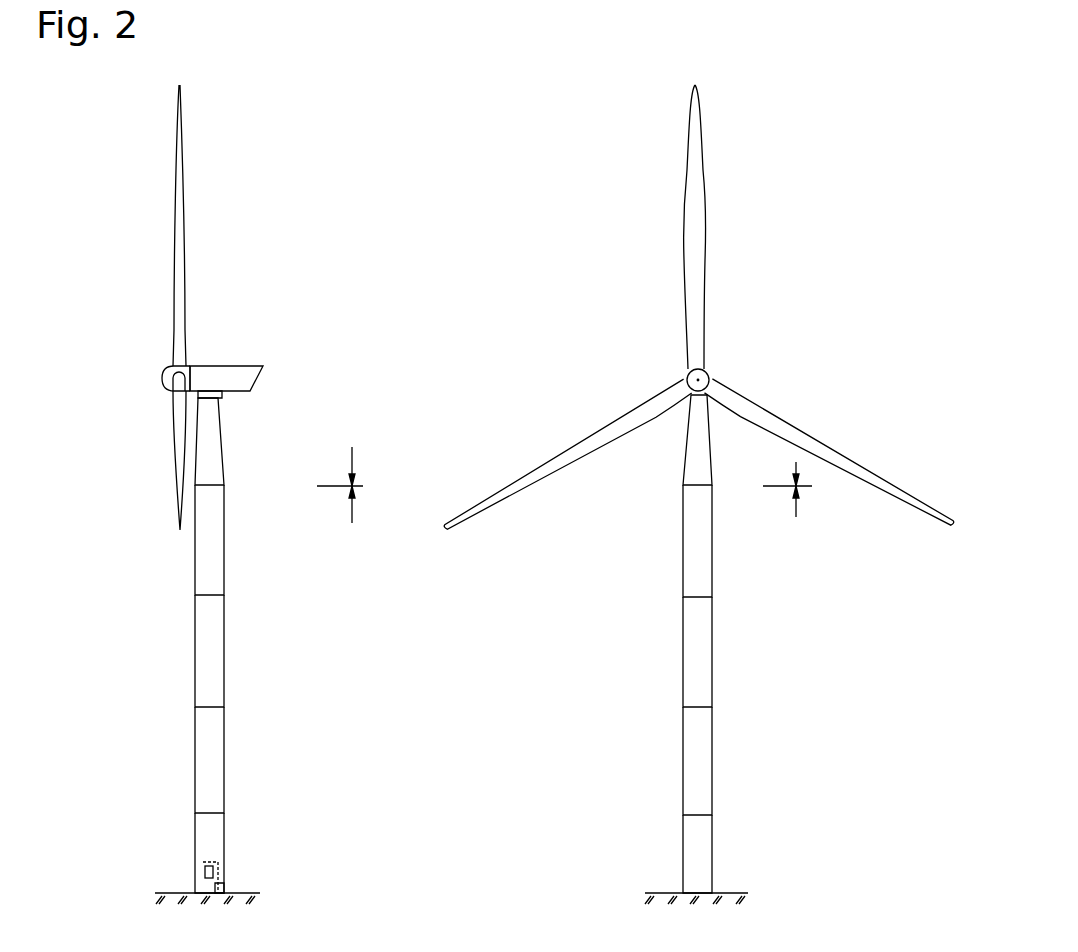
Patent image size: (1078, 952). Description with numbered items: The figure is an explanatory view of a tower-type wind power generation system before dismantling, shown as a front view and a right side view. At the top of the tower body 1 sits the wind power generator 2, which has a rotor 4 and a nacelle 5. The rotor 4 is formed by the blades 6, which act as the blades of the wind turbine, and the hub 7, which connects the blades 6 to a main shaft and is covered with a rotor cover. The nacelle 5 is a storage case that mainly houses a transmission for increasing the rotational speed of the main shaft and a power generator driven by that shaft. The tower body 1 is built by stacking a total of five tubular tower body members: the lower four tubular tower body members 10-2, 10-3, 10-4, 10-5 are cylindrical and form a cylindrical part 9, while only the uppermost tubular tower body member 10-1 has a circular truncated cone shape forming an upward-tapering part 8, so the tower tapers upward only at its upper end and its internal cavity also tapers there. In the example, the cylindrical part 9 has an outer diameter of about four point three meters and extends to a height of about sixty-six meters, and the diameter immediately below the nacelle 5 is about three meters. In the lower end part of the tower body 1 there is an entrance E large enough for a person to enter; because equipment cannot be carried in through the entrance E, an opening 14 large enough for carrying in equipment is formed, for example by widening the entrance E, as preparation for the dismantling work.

The tower body 1 is at (161, 610).
The wind power generator 2 is at (262, 340).
The rotor 4 is at (142, 351).
The nacelle 5 is at (263, 380).
The blade 6 is at (185, 222).
The hub 7 is at (162, 378).
The upward-tapering part 8 is at (564, 452).
The cylindrical part 9 is at (574, 522).
The uppermost tubular tower body member 10-1 is at (224, 448).
The tubular tower body member 10-2 is at (224, 552).
The tubular tower body member 10-3 is at (224, 655).
The tubular tower body member 10-4 is at (224, 758).
The tubular tower body member 10-5 is at (224, 828).
The opening 14 is at (224, 884).
The entrance E is at (209, 866).